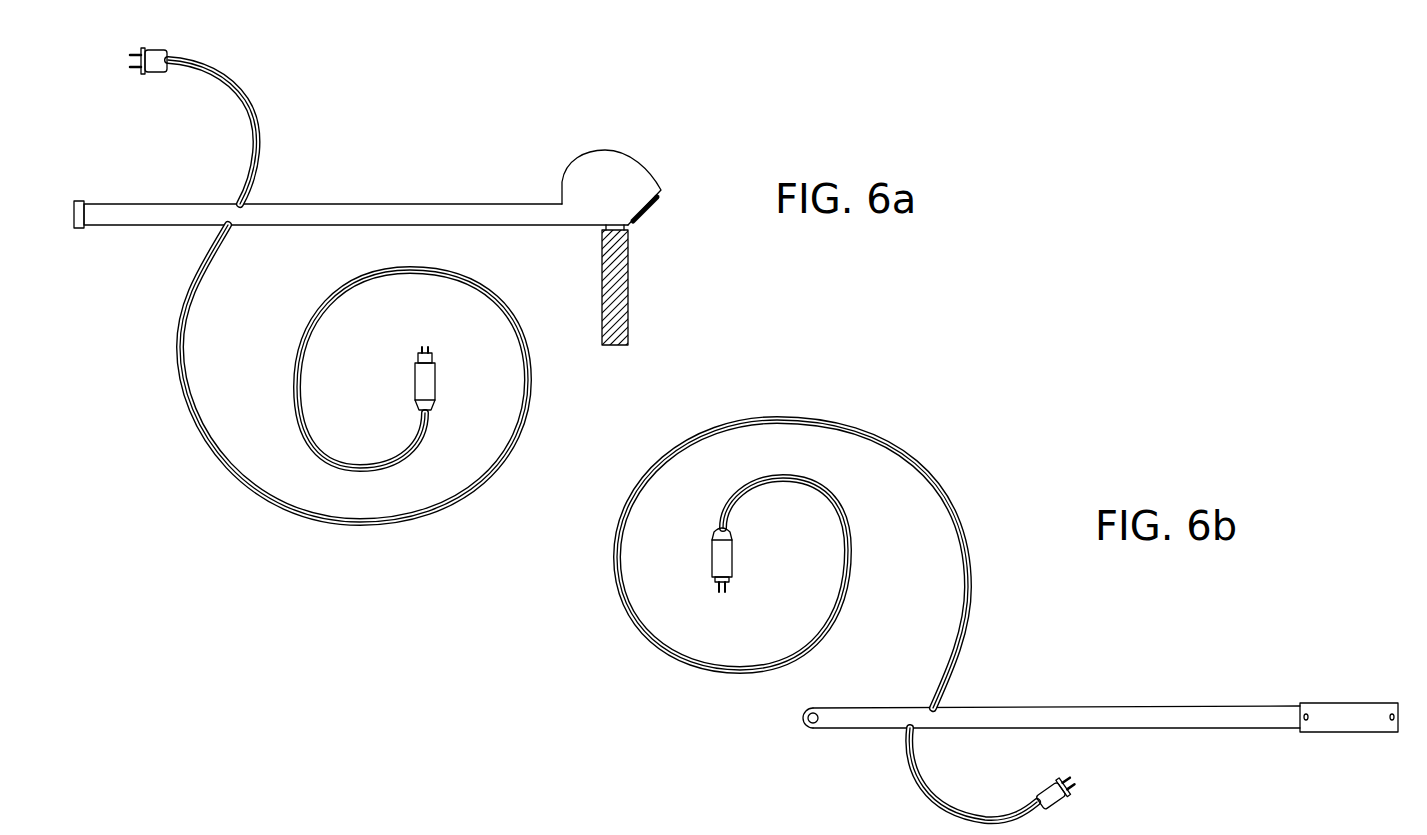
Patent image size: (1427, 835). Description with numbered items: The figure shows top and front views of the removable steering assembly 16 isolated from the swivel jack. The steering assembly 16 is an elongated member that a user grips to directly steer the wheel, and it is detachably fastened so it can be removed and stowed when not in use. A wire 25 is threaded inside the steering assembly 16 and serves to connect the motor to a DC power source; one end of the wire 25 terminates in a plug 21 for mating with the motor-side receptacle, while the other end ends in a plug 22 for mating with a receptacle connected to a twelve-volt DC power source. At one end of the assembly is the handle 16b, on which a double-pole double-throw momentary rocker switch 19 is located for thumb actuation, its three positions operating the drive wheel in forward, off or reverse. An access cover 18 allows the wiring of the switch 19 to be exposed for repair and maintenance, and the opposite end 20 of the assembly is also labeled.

In FIG. 6a, the steering assembly 16 is at (368, 225).
In FIG. 6b, the steering assembly 16 is at (1048, 705).
In FIG. 6a, the handle 16b is at (628, 293).
In FIG. 6a, the access cover 18 is at (563, 193).
In FIG. 6b, the access cover 18 is at (1360, 700).
In FIG. 6a, the DPDT momentary rocker switch 19 is at (645, 208).
In FIG. 6a, the end cap 20 is at (77, 230).
In FIG. 6b, the end cap 20 is at (805, 722).
In FIG. 6a, the plug 21 is at (193, 57).
In FIG. 6b, the plug 21 is at (1077, 782).
In FIG. 6a, the plug 22 is at (443, 412).
In FIG. 6b, the plug 22 is at (718, 557).
In FIG. 6a, the wire 25 is at (259, 128).
In FIG. 6b, the wire 25 is at (827, 620).